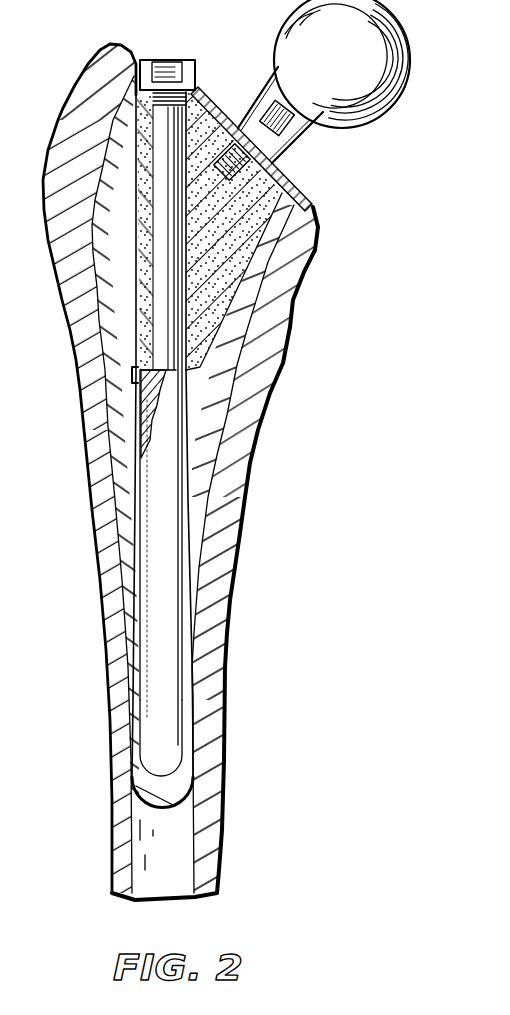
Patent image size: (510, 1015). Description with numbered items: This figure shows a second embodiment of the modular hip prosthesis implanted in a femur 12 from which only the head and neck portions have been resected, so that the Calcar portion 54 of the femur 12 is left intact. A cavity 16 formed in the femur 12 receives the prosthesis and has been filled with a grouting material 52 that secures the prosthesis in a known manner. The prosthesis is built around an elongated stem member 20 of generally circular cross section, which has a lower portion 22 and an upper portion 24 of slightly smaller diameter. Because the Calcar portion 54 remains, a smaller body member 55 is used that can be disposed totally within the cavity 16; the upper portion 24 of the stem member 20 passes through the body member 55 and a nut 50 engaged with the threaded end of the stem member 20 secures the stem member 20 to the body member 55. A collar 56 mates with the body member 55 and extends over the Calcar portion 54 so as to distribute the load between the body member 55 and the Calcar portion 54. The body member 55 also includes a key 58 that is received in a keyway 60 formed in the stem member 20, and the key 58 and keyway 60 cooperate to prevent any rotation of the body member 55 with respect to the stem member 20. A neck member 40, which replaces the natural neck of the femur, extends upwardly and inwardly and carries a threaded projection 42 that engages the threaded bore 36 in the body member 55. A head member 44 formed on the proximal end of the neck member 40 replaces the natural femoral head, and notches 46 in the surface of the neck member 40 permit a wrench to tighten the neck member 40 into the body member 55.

The femur 12 is at (248, 522).
The cavity 16 is at (222, 463).
The stem member 20 is at (168, 615).
The lower portion 22 is at (170, 752).
The upper portion 24 is at (160, 275).
The threaded bore 36 is at (247, 157).
The neck member 40 is at (315, 127).
The threaded projection 42 is at (217, 152).
The head member 44 is at (363, 105).
The notches 46 is at (282, 130).
The nut 50 is at (194, 61).
The grouting material 52 is at (222, 380).
The Calcar portion 54 is at (300, 304).
The body member 55 is at (252, 238).
The collar 56 is at (316, 210).
The key 58 is at (137, 379).
The keyway 60 is at (140, 403).